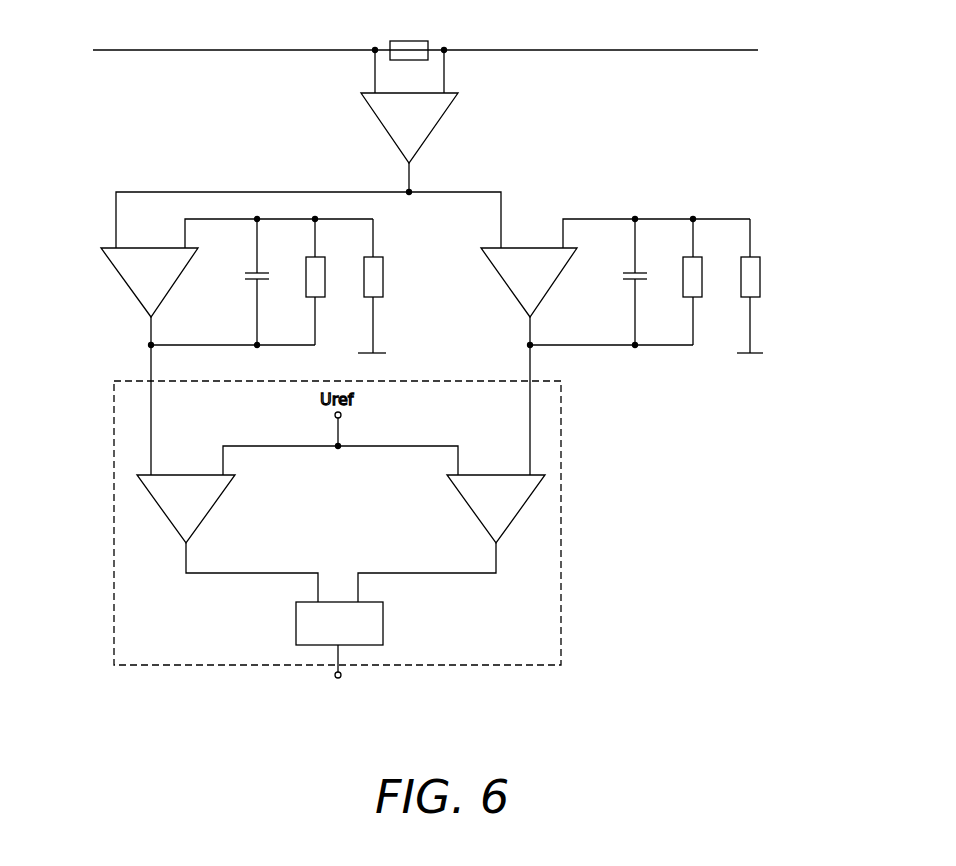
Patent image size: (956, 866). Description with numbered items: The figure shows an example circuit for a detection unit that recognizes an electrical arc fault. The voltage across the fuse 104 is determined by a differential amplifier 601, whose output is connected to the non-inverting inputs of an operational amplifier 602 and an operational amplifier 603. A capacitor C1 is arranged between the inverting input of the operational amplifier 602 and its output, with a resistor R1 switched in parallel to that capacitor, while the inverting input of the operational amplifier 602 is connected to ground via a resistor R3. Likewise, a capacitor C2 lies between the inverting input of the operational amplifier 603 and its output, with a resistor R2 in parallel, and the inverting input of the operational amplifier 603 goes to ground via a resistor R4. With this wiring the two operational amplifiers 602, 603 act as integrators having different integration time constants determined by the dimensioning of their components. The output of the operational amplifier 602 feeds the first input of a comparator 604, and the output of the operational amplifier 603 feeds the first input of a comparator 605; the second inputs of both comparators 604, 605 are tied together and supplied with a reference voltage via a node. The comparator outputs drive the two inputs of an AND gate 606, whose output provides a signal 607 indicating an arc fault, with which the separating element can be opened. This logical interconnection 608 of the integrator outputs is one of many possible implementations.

The fuse 104 is at (409, 40).
The differential amplifier 601 is at (390, 128).
The operational amplifier 602 is at (143, 282).
The operational amplifier 603 is at (521, 282).
The comparator 604 is at (177, 509).
The comparator 605 is at (488, 509).
The AND gate 606 is at (359, 623).
The signal 607 is at (337, 675).
The logical interconnection 608 is at (561, 602).
The capacitor C1 is at (244, 282).
The capacitor C2 is at (620, 282).
The resistor R1 is at (302, 282).
The resistor R2 is at (679, 282).
The resistor R3 is at (383, 286).
The resistor R4 is at (760, 286).